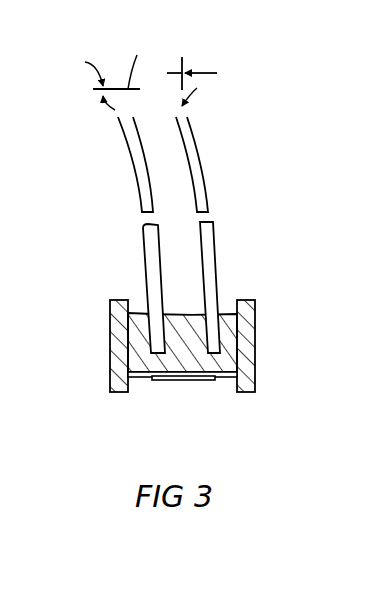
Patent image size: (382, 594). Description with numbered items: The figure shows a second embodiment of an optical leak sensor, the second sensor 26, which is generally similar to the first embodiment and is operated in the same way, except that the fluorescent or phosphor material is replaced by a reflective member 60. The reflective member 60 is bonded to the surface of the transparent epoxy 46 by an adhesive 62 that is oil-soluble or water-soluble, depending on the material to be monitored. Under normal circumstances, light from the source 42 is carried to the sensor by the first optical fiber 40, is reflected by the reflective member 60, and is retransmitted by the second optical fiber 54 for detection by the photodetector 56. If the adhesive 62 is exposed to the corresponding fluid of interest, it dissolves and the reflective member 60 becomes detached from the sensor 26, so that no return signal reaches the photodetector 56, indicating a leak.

The second sensor 26 is at (274, 337).
The first optical fiber 40 is at (235, 193).
The light source 42 is at (195, 60).
The transparent epoxy 46 is at (223, 313).
The second optical fiber 54 is at (140, 198).
The photodetector 56 is at (113, 62).
The reflective member 60 is at (177, 380).
The adhesive 62 is at (228, 377).